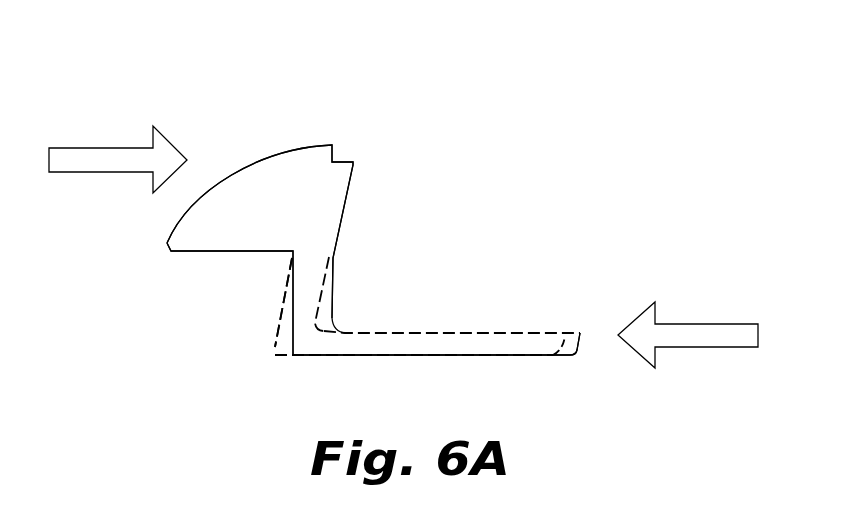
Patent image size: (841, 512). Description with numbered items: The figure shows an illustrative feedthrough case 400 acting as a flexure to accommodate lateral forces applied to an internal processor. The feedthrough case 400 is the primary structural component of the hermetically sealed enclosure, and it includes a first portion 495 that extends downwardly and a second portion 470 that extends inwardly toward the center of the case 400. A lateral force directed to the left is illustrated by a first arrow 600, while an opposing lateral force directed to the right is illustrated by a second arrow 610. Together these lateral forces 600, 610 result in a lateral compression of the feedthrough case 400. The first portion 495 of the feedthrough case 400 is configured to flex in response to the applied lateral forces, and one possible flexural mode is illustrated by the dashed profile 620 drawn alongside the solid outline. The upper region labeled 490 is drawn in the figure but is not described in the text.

The feedthrough case 400 is at (388, 108).
The upper member 490 is at (268, 173).
The first portion 495 is at (310, 308).
The second portion 470 is at (477, 345).
The first arrow 600 is at (107, 163).
The second arrow 610 is at (678, 328).
The dashed profile 620 is at (276, 337).